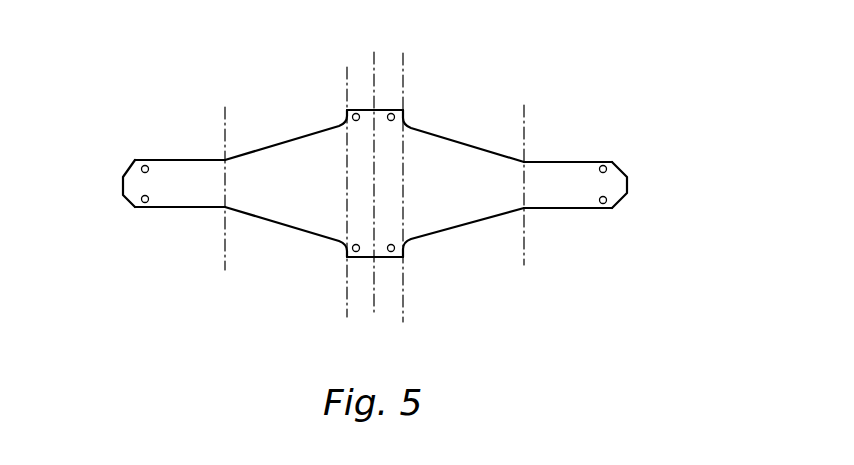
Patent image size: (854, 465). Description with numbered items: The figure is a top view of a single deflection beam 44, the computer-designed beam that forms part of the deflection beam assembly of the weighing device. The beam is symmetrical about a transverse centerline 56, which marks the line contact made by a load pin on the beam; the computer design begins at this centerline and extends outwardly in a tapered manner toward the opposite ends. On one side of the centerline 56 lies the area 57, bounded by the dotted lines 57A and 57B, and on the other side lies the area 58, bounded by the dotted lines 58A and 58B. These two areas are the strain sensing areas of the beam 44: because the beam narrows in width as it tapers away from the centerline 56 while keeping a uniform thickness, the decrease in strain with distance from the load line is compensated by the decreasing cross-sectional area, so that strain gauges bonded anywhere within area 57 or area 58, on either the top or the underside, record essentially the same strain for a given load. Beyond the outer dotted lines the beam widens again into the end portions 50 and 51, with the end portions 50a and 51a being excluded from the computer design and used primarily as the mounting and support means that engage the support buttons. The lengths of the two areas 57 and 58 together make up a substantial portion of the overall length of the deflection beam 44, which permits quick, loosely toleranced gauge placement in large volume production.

The deflection beam 44 is at (687, 105).
The end portion 50 is at (122, 183).
The deflection beam end portion 50a is at (185, 168).
The end portion 51 is at (627, 185).
The deflection beam end portion 51a is at (558, 178).
The transverse centerline 56 is at (373, 82).
The area 57 is at (448, 153).
The dotted line 57A is at (403, 270).
The dotted line 57B is at (524, 245).
The area 58 is at (305, 170).
The dotted line 58A is at (225, 245).
The dotted line 58B is at (347, 82).